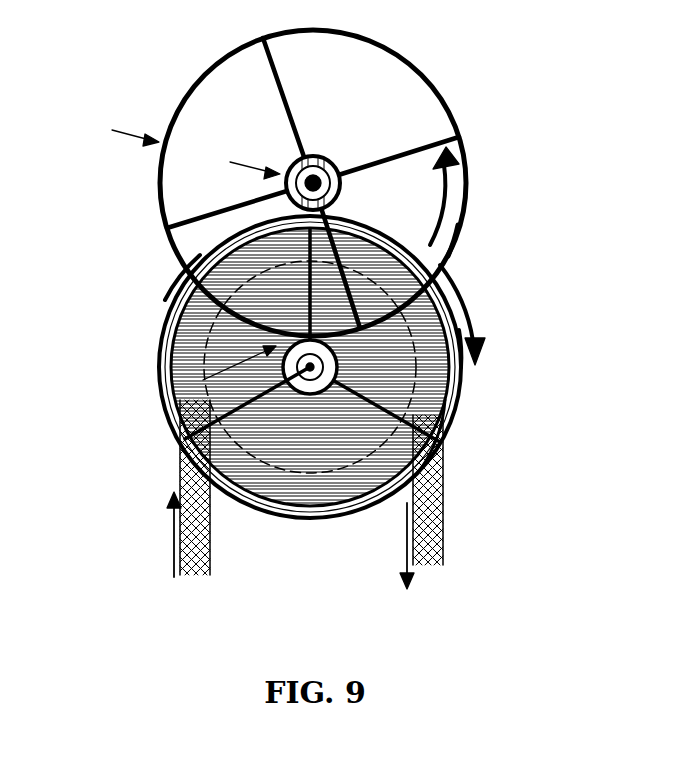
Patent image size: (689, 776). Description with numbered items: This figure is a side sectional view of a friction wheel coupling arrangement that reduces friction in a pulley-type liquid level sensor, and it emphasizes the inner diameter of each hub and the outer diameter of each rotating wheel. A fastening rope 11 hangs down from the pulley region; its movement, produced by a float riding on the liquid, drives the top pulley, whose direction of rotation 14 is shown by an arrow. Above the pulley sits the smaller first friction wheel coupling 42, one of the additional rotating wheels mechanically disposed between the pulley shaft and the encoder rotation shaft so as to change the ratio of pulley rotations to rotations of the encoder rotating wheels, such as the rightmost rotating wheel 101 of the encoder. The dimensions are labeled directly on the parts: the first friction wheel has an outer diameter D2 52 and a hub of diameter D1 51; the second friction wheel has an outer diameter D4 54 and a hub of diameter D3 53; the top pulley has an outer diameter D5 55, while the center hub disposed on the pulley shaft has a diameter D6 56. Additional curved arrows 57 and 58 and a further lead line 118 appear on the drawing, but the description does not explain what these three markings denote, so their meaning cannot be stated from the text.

The fastening rope 11 is at (412, 538).
The rotation direction 14 is at (164, 345).
The first friction wheel coupling 42 is at (380, 36).
The hub diameter D1 51 is at (352, 192).
The outer diameter D2 52 is at (507, 237).
The hub diameter D3 53 is at (447, 474).
The outer diameter D4 54 is at (468, 392).
The outer diameter D5 55 is at (175, 456).
The center hub diameter D6 56 is at (172, 413).
The rotation direction 57 is at (470, 203).
The rim portion 58 is at (480, 320).
The rightmost rotating wheel 101 is at (178, 277).
The rotation arrow 118 is at (462, 300).